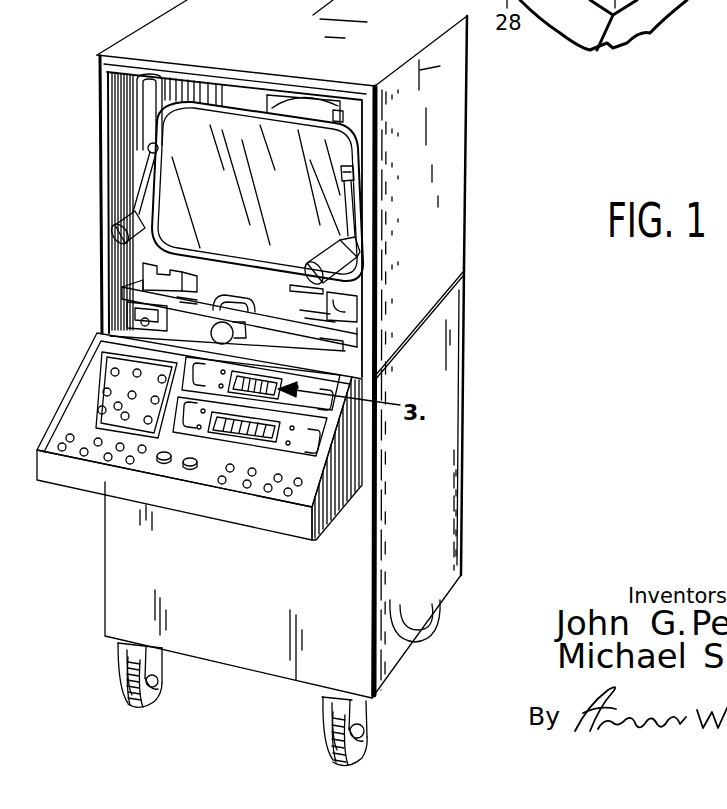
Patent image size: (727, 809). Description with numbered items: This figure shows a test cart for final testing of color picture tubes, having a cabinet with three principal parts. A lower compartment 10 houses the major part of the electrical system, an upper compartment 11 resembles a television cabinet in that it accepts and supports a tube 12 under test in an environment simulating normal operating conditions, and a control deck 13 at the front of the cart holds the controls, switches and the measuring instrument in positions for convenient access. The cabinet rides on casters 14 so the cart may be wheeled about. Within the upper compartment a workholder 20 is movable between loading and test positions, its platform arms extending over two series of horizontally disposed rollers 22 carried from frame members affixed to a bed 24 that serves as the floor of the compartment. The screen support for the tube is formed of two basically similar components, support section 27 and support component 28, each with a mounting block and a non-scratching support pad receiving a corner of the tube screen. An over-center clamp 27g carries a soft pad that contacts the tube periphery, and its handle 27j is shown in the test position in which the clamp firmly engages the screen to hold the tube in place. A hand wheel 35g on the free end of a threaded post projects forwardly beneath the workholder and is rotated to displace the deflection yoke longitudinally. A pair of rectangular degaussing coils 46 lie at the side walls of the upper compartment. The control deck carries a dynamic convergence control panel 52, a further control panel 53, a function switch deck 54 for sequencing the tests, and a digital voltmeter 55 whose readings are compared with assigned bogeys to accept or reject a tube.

The lower compartment 10 is at (433, 480).
The upper compartment 11 is at (453, 156).
The tube 12 is at (183, 125).
The control deck 13 is at (76, 394).
The casters 14 is at (128, 698).
The workholder 20 is at (133, 288).
The rollers 22 is at (133, 313).
The bed 24 is at (683, 0).
The support section 27 is at (147, 262).
The over-center clamp 27g is at (138, 148).
The handle 27j is at (123, 220).
The screen support component 28 is at (352, 318).
The hand wheel 35g is at (353, 360).
The degaussing coils 46 is at (137, 92).
The dynamic convergence control panel 52 is at (118, 409).
The control panel 53 is at (106, 459).
The function switch deck 54 is at (228, 422).
The digital voltmeter 55 is at (258, 392).